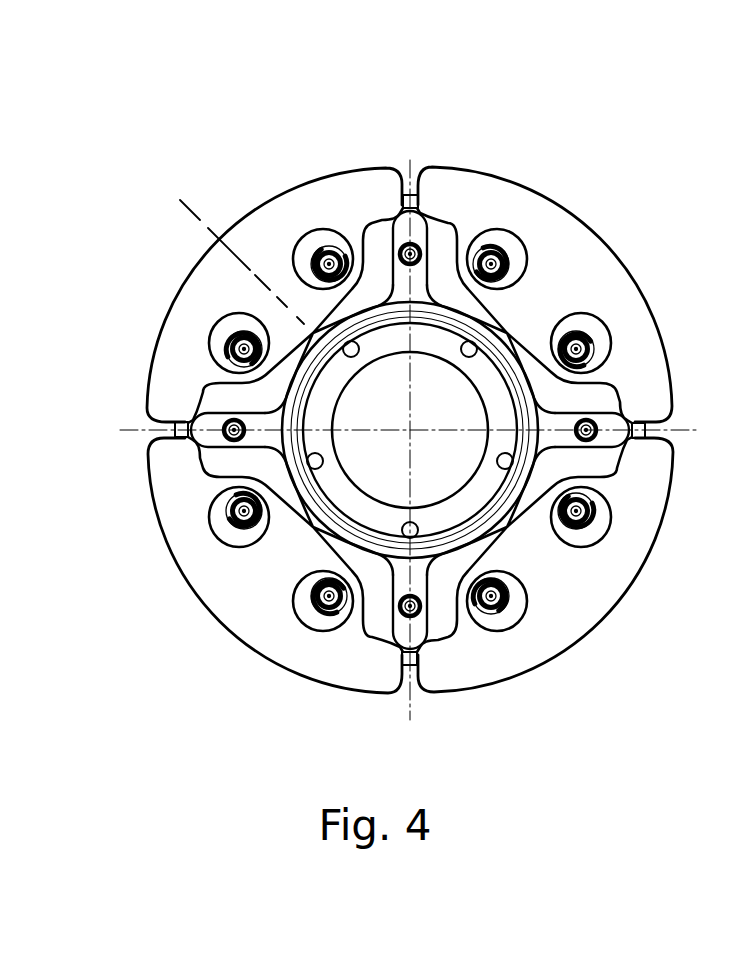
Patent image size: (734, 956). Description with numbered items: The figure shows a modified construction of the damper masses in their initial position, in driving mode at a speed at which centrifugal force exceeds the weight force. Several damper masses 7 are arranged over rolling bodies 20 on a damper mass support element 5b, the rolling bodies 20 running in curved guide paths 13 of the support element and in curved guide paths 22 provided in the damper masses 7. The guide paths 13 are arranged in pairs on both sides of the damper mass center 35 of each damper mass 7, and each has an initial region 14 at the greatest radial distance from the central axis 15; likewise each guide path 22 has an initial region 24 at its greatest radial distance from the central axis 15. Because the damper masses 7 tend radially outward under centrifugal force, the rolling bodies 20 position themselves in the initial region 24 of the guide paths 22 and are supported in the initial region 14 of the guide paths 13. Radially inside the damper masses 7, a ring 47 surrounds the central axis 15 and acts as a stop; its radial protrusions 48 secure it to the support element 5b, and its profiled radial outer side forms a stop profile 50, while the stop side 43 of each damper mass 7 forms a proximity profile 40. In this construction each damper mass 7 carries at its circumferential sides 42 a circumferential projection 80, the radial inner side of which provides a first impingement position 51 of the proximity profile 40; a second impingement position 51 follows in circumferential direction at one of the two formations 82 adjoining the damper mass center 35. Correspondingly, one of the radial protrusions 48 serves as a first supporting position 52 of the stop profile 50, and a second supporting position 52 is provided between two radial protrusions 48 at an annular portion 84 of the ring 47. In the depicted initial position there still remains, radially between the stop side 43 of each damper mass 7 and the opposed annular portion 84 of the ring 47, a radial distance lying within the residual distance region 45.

The damper mass support element 5b is at (582, 402).
The damper mass 7 is at (180, 340).
The guide path 13 is at (567, 333).
The initial region 14 is at (592, 340).
The central axis 15 is at (413, 430).
The rolling body 20 is at (495, 296).
The guide path 22 is at (505, 262).
The initial region 24 is at (506, 270).
The damper mass center 35 is at (196, 212).
The proximity profile 40 is at (207, 333).
The circumferential side 42 is at (412, 195).
The stop side 43 is at (322, 248).
The residual distance region 45 is at (362, 256).
The ring 47 is at (335, 530).
The radial protrusion 48 is at (425, 218).
The stop profile 50 is at (385, 303).
The impingement position 51 is at (400, 203).
The supporting position 52 is at (430, 222).
The circumferential projection 80 is at (418, 200).
The formation 82 is at (302, 247).
The annular portion 84 is at (316, 336).